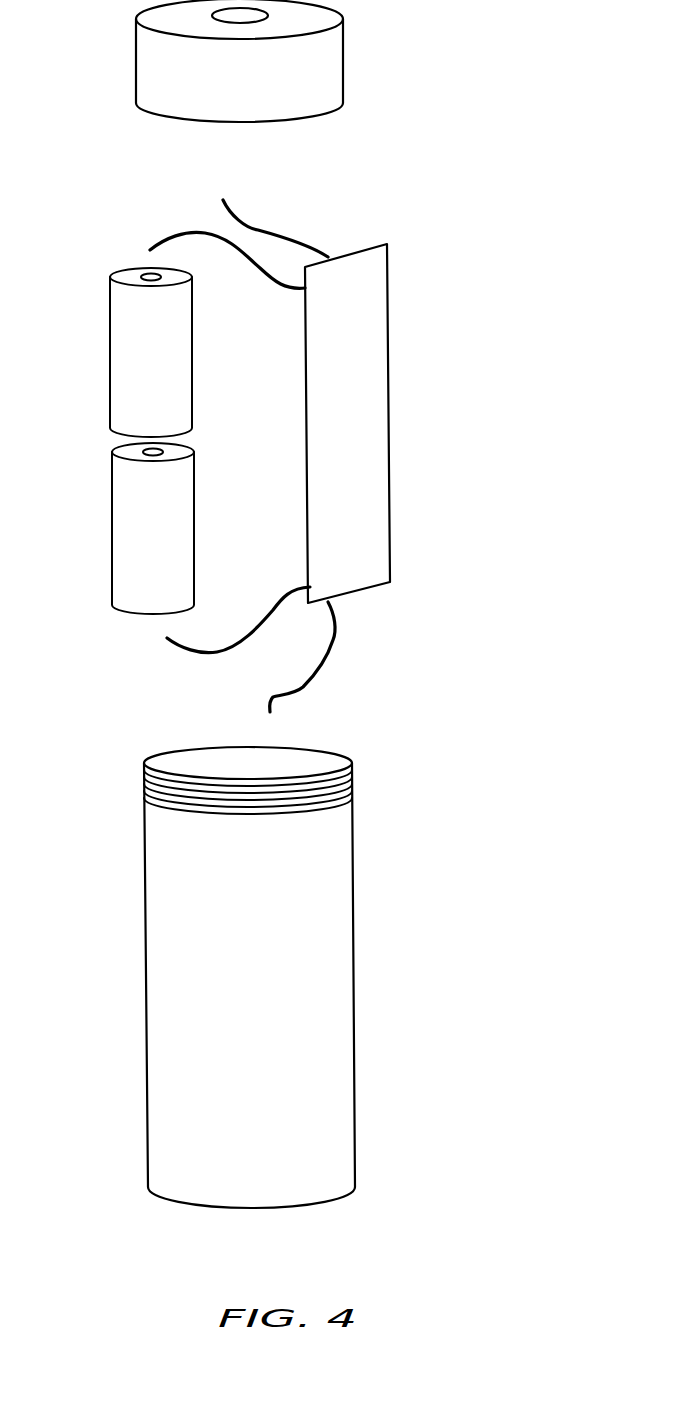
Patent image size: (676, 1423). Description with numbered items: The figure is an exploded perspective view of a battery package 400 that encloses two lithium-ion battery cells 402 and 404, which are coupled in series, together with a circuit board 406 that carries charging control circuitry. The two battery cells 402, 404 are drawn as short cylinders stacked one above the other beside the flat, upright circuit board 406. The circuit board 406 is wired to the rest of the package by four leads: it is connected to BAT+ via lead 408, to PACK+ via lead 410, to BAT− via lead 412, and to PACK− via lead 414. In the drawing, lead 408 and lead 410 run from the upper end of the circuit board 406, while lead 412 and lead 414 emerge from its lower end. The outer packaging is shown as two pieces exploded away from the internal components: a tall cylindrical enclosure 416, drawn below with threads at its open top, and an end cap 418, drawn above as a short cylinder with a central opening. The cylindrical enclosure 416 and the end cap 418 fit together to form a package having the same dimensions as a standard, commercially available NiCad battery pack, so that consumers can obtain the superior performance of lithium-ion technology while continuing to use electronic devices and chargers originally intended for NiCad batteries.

The battery package 400 is at (433, 83).
The lithium-ion battery cell 402 is at (120, 350).
The lithium-ion battery cell 404 is at (122, 530).
The circuit board 406 is at (372, 422).
The lead 408 is at (185, 231).
The lead 410 is at (270, 232).
The lead 412 is at (207, 653).
The lead 414 is at (335, 648).
The cylindrical enclosure 416 is at (175, 960).
The end cap 418 is at (135, 63).